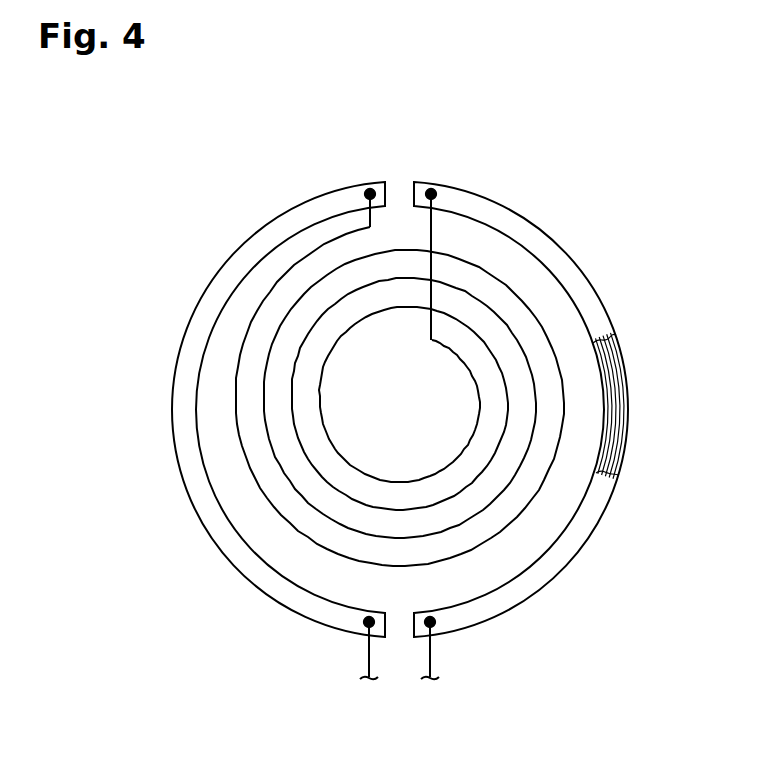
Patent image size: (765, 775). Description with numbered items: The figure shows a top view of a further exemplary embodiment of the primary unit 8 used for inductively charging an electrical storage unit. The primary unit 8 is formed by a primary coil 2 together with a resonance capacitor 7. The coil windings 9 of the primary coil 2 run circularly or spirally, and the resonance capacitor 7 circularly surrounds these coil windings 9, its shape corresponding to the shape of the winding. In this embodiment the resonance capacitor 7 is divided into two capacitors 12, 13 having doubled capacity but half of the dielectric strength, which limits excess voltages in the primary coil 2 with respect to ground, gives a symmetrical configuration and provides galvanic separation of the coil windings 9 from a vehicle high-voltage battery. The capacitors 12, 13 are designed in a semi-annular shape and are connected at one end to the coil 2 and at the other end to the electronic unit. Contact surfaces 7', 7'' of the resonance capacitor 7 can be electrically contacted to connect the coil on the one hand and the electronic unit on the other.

The primary unit 8 is at (538, 126).
The primary coil 2 is at (440, 432).
The capacitor 13 is at (287, 230).
The capacitor 12 is at (549, 392).
The resonance capacitor 7 is at (635, 457).
The coil windings 9 is at (488, 543).
The contact surface 7' is at (476, 664).
The contact surface 7'' is at (324, 664).